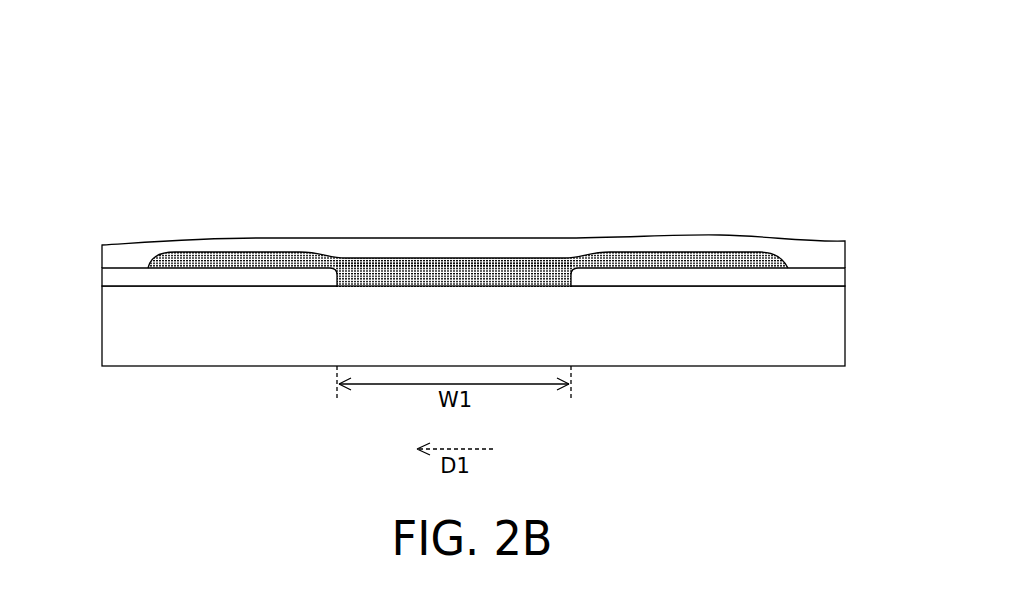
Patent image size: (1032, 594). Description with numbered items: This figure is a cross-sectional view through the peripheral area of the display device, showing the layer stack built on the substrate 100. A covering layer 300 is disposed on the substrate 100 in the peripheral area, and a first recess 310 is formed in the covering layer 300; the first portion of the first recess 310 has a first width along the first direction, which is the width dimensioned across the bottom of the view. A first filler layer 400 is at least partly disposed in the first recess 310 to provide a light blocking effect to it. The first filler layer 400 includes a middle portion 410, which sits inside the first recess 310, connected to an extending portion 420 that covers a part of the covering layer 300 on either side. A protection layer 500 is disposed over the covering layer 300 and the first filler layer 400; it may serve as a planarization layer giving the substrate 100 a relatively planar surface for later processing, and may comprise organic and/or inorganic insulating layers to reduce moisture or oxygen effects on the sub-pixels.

The substrate 100 is at (845, 330).
The covering layer 300 is at (103, 275).
The first recess 310 is at (384, 278).
The first filler layer 400 is at (469, 160).
The middle portion 410 is at (454, 185).
The extending portion 420 is at (275, 252).
The protection layer 500 is at (845, 250).